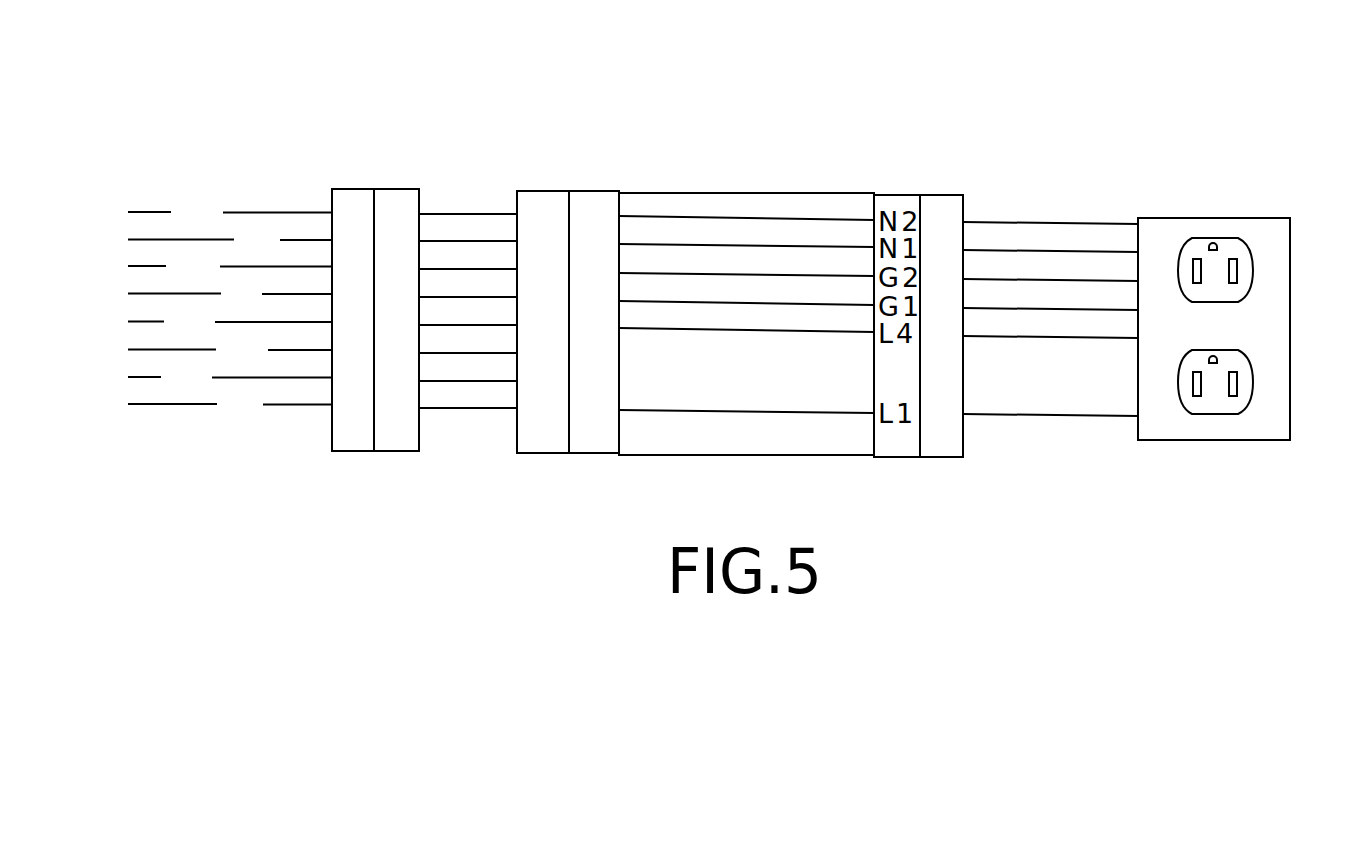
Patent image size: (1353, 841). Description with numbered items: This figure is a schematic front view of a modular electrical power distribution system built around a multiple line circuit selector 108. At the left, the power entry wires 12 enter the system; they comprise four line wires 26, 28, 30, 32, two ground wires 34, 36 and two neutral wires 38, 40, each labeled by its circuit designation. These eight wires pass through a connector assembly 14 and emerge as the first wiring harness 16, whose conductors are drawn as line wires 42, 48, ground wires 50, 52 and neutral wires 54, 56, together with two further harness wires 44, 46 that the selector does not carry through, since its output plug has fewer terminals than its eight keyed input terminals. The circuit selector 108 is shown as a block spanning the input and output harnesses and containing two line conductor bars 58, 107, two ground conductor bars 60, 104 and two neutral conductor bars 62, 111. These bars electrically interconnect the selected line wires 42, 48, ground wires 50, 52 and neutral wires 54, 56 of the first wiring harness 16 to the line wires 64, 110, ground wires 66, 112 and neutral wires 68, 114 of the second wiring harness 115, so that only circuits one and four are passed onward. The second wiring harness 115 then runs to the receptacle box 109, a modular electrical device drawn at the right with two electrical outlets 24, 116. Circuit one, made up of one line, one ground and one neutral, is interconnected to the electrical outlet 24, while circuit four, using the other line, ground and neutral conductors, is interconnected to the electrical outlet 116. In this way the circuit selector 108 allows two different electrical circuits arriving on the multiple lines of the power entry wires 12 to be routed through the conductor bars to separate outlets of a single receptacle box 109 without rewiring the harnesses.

The power entry wires 12 is at (212, 165).
The connector assembly 14 is at (358, 165).
The first wiring harness 16 is at (484, 170).
The neutral wire 40 is at (212, 212).
The neutral wire 38 is at (212, 239).
The ground wire 36 is at (212, 266).
The ground wire 34 is at (212, 293).
The line wire 32 is at (212, 321).
The line wire 30 is at (212, 349).
The line wire 28 is at (212, 377).
The line wire 26 is at (212, 404).
The neutral wire 56 is at (492, 213).
The neutral wire 54 is at (492, 240).
The ground wire 52 is at (492, 268).
The ground wire 50 is at (492, 296).
The line wire 48 is at (492, 324).
The conductor L3 46 is at (492, 352).
The conductor L2 44 is at (492, 380).
The line wire 42 is at (492, 407).
The circuit selector 108 is at (718, 103).
The neutral conductor bar 111 is at (706, 216).
The neutral conductor bar 62 is at (700, 244).
The ground conductor bar 104 is at (700, 273).
The ground conductor bar 60 is at (700, 301).
The line conductor bar 107 is at (700, 328).
The line conductor bar 58 is at (710, 412).
The second wiring harness 115 is at (1063, 160).
The neutral wire 114 is at (1098, 222).
The neutral wire 68 is at (1092, 250).
The ground wire 112 is at (1092, 279).
The ground wire 66 is at (1088, 308).
The line wire 110 is at (1097, 336).
The line wire 64 is at (1007, 414).
The receptacle box 109 is at (1211, 196).
The electrical outlet 24 is at (1253, 263).
The electrical outlet 116 is at (1248, 398).